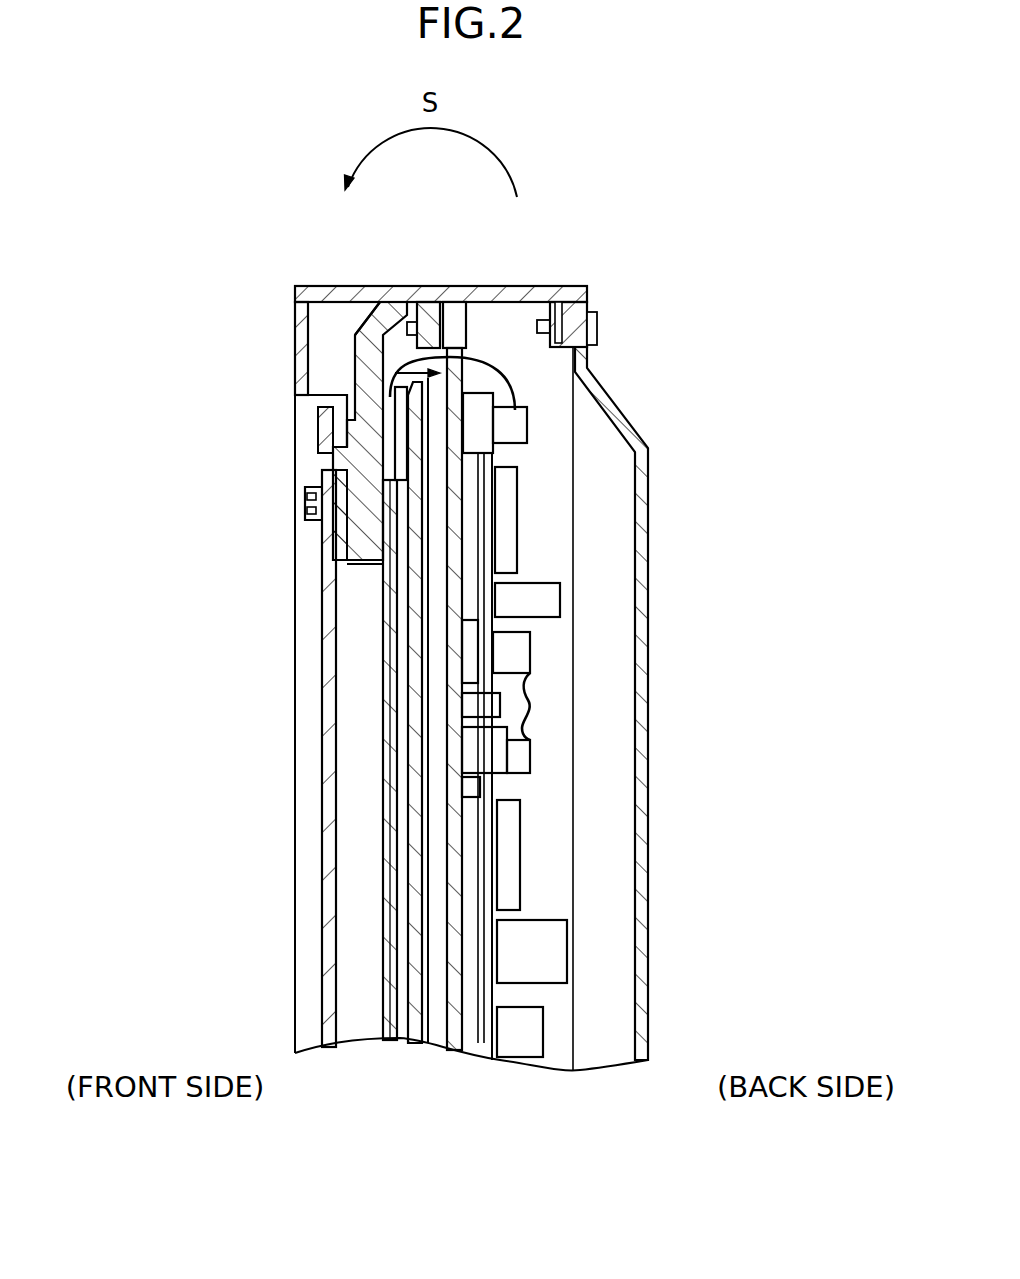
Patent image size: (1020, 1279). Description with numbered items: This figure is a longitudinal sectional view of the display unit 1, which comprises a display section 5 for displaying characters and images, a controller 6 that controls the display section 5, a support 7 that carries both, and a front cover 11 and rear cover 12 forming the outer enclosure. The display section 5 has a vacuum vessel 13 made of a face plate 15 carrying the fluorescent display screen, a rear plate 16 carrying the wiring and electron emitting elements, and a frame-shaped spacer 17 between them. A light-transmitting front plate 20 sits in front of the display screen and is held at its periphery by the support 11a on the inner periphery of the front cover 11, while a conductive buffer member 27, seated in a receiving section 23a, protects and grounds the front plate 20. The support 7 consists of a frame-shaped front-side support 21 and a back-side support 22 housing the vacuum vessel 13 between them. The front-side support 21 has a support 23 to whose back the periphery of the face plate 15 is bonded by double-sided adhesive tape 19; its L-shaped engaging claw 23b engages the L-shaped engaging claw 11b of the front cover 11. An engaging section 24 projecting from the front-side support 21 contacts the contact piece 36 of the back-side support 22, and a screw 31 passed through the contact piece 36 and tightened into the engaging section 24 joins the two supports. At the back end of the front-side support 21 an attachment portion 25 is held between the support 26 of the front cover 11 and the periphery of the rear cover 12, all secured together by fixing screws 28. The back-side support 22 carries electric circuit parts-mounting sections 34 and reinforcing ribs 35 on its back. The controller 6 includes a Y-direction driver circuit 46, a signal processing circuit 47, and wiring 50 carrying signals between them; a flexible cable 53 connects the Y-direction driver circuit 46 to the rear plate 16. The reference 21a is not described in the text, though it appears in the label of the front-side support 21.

The display unit 1 is at (346, 1198).
The display section 5 is at (378, 688).
The controller 6 is at (552, 478).
The support 7 is at (350, 334).
The front cover 11 is at (300, 376).
The support 11a is at (305, 540).
The engaging claw 11b is at (320, 404).
The rear cover 12 is at (640, 957).
The vacuum vessel 13 is at (403, 918).
The face plate 15 is at (390, 792).
The rear plate 16 is at (417, 740).
The spacer 17 is at (365, 378).
The double-sided adhesive tape 19 is at (382, 567).
The front plate 20 is at (330, 981).
The front-side support 21 is at (360, 293).
The chamfered inner lip of cap 21a is at (367, 318).
The back-side support 22 is at (455, 858).
The support 23 is at (355, 565).
The receiving section 23a is at (330, 505).
The engaging claw 23b is at (330, 438).
The engaging section 24 is at (420, 297).
The attachment portion 25 is at (590, 300).
The support 26 is at (553, 297).
The conductive buffer member 27 is at (328, 472).
The fixing screw 28 is at (596, 333).
The screw 31 is at (468, 330).
The electric circuit parts-mounting section 34 is at (476, 782).
The reinforcing rib 35 is at (488, 708).
The contact piece 36 is at (453, 297).
The Y-direction driver circuit 46 is at (508, 535).
The signal processing circuit 47 is at (513, 877).
The wiring 50 is at (527, 690).
The flexible cable 53 is at (520, 378).